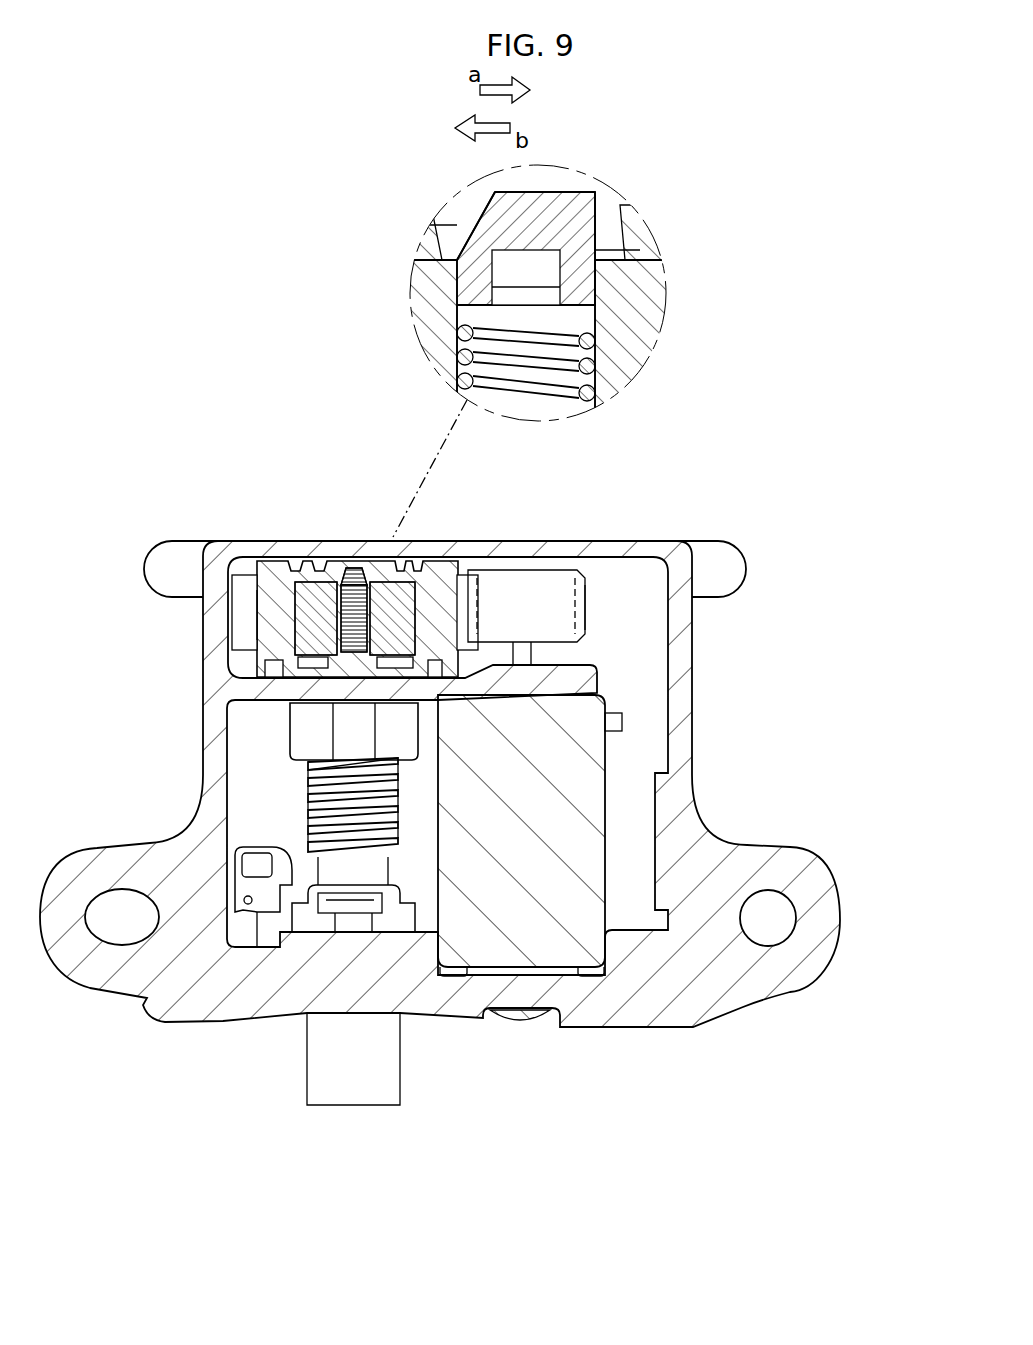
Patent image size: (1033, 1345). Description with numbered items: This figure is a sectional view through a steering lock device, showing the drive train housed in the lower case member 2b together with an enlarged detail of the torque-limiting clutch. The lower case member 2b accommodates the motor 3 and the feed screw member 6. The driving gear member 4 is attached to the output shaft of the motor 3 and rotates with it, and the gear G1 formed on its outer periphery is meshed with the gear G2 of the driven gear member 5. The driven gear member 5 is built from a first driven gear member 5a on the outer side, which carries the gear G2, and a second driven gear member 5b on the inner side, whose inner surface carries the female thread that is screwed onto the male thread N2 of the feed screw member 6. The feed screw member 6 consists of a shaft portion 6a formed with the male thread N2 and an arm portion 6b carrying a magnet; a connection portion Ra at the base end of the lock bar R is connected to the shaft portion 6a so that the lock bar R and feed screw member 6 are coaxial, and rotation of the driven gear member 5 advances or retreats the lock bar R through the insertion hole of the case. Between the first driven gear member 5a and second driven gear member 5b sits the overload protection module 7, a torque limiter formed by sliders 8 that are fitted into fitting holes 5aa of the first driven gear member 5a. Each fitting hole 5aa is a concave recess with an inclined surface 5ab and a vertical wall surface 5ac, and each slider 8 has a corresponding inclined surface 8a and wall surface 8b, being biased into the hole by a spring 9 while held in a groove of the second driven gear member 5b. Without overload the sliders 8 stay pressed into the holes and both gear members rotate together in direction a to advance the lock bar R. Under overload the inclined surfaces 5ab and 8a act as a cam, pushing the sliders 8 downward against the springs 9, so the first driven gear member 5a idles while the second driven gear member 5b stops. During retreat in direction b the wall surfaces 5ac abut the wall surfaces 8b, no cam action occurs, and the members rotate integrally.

The lower case member 2b is at (692, 705).
The motor 3 is at (600, 745).
The driving gear member 4 is at (522, 574).
The driven gear member 5 is at (420, 567).
The first driven gear member 5a is at (240, 610).
The fitting hole 5aa is at (571, 190).
The inclined surface 5ab is at (505, 225).
The vertical wall surface 5ac is at (590, 203).
The second driven gear member 5b is at (318, 590).
The feed screw member 6 is at (285, 797).
The shaft portion 6a is at (312, 812).
The arm portion 6b is at (270, 925).
The overload protection module 7 is at (428, 242).
The slider 8 is at (457, 282).
The inclined surface 8a is at (462, 228).
The wall surface 8b is at (605, 250).
The spring 9 is at (447, 358).
The gear G1 is at (580, 618).
The gear G2 is at (248, 625).
The male thread N2 is at (305, 768).
The lock bar R is at (360, 1105).
The connection portion Ra is at (358, 915).